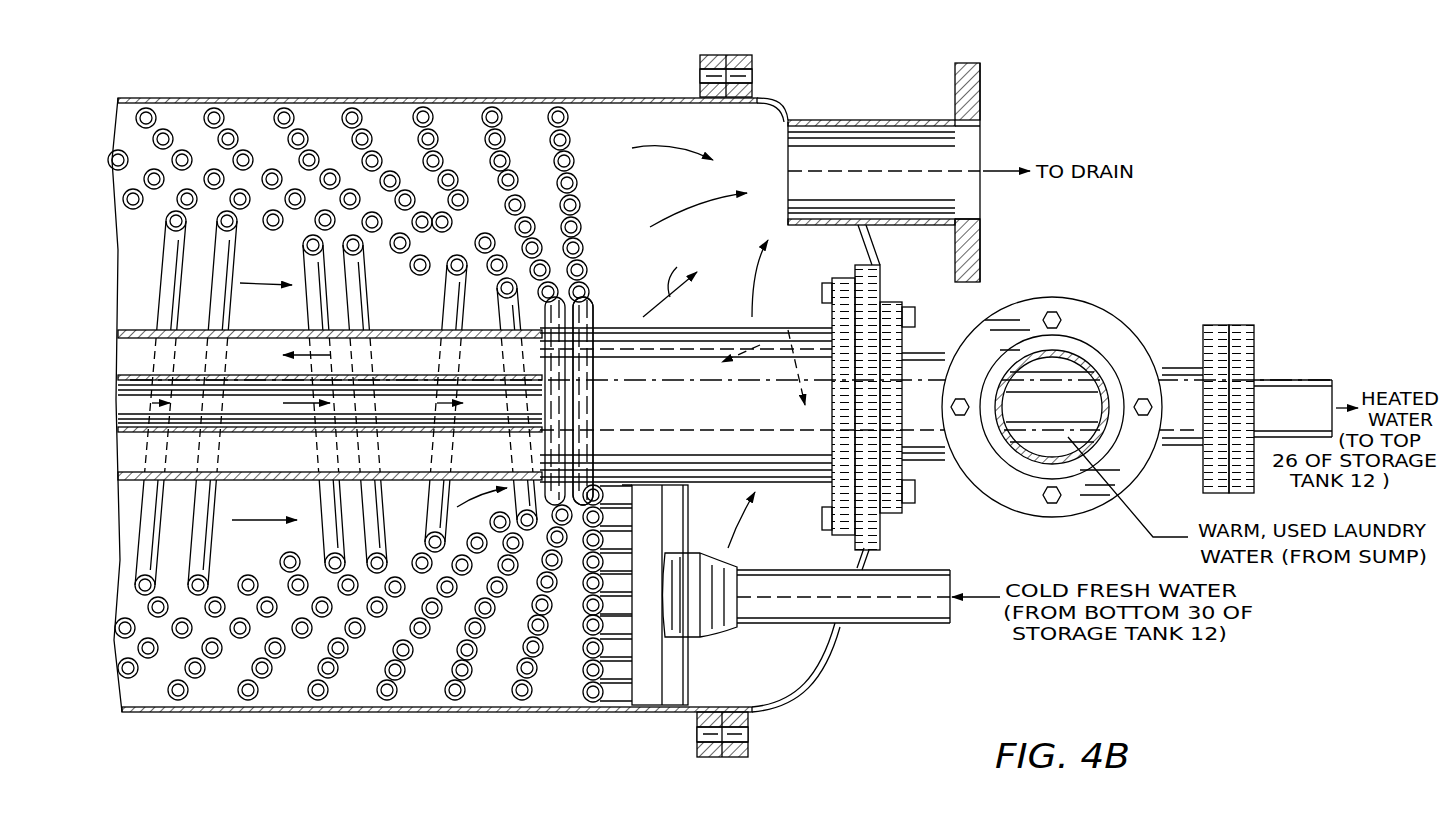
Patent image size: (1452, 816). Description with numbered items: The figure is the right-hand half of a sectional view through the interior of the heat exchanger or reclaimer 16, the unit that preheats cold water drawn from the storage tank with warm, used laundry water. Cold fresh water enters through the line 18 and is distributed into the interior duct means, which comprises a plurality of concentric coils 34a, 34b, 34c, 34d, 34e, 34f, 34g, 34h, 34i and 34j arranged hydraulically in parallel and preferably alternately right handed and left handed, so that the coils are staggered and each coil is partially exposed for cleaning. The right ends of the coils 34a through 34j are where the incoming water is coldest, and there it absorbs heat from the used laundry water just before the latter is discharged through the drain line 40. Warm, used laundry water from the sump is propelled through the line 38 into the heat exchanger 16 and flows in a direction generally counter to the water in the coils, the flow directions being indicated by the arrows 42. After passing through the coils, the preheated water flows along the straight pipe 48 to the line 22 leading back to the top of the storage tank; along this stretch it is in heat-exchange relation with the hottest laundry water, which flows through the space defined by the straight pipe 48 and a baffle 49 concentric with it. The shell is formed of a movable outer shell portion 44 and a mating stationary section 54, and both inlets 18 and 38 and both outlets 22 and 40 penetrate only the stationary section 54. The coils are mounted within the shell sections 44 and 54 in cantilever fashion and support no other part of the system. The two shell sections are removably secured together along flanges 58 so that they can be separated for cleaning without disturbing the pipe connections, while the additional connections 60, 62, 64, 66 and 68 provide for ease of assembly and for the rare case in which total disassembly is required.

The heat exchanger 16 is at (423, 730).
The line 18 is at (882, 625).
The line 22 is at (1290, 380).
The coil 34a is at (593, 312).
The coil 34b is at (490, 522).
The coil 34c is at (440, 488).
The coil 34d is at (414, 565).
The coil 34e is at (208, 578).
The coil 34f is at (138, 604).
The coil 34g is at (145, 625).
The coil 34h is at (175, 645).
The coil 34i is at (185, 668).
The coil 34j is at (238, 690).
The line 38 is at (934, 462).
The drain line 40 is at (906, 120).
The arrows 42 is at (675, 213).
The movable outer shell portion 44 is at (343, 712).
The straight pipe 48 is at (407, 370).
The baffle 49 is at (404, 330).
The stationary section 54 is at (810, 662).
The flanges 58 is at (740, 758).
The connection 60 is at (1240, 325).
The connection 62 is at (1118, 325).
The connection 64 is at (975, 90).
The connection 66 is at (842, 278).
The connection 68 is at (700, 625).